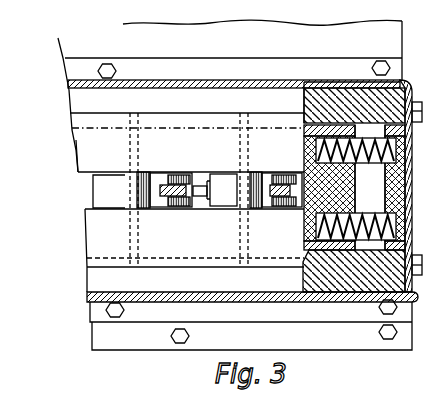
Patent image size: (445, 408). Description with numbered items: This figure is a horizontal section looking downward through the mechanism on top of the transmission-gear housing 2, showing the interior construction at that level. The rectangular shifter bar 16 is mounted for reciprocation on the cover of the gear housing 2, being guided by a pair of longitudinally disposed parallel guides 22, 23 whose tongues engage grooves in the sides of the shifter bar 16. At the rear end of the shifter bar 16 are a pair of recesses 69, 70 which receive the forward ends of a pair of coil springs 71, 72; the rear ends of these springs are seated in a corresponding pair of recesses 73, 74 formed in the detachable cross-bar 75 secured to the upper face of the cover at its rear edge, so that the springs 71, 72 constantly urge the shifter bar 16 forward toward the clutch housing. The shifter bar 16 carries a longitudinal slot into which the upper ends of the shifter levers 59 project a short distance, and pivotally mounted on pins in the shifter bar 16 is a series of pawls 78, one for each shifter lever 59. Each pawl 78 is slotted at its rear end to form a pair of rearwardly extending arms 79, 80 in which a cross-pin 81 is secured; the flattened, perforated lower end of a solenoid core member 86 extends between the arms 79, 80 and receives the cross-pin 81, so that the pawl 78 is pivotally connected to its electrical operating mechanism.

The transmission-gear housing 2 is at (230, 96).
The guide 23 is at (70, 101).
The shifter bar 16 is at (78, 150).
The guide 22 is at (92, 283).
The coil spring 71 is at (312, 149).
The coil spring 72 is at (315, 232).
The cross-bar 75 is at (408, 193).
The recess 73 is at (402, 157).
The recess 74 is at (402, 233).
The recess 69 is at (355, 163).
The recess 70 is at (354, 212).
The pawl 78 is at (112, 196).
The solenoid core member 86 is at (174, 176).
The arm 79 is at (181, 176).
The cross-pin 81 is at (175, 200).
The arm 80 is at (188, 207).
The shifter lever 59 is at (203, 195).